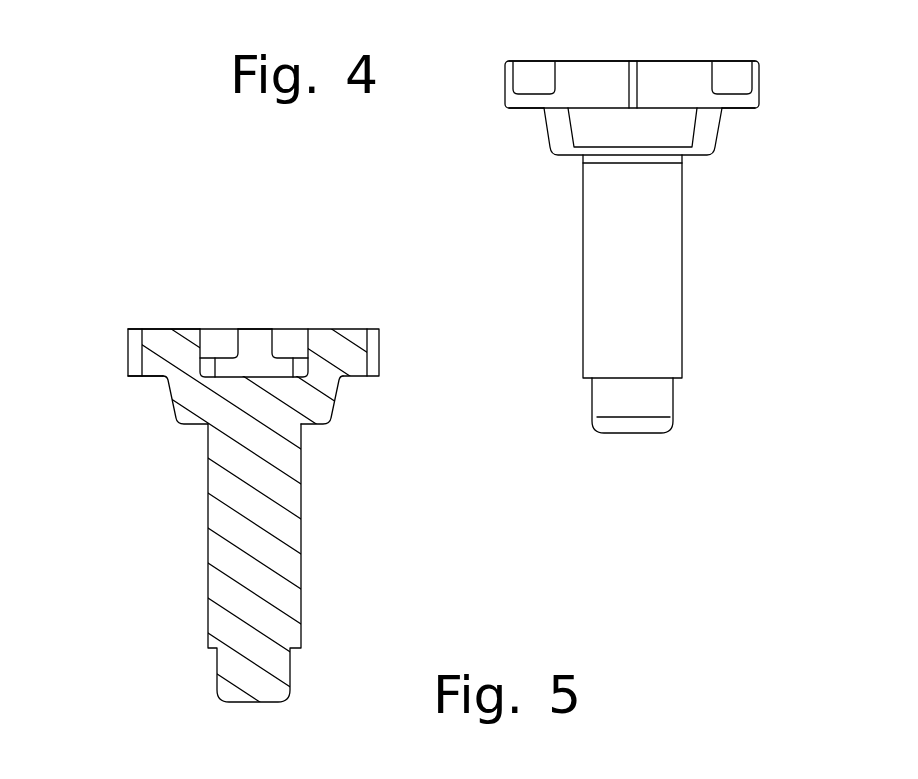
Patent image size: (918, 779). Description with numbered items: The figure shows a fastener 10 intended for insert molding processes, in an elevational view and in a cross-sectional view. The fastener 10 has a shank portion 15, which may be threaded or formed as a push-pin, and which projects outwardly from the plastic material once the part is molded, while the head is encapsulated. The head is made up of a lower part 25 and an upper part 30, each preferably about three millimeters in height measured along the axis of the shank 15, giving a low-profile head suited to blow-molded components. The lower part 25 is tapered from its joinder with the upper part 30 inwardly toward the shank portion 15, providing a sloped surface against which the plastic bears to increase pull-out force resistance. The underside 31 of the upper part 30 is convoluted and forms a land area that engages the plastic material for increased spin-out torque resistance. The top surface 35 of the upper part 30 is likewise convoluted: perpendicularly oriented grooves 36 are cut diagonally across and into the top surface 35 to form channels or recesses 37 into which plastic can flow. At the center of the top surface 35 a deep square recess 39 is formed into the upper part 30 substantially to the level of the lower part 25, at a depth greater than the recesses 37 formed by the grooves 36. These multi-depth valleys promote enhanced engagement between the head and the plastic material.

In FIG. 4, the fastener 10 is at (635, 216).
In FIG. 5, the fastener 10 is at (263, 478).
In FIG. 4, the shank portion 15 is at (660, 296).
In FIG. 5, the shank portion 15 is at (293, 539).
In FIG. 4, the lower part 25 is at (717, 142).
In FIG. 5, the lower part 25 is at (330, 405).
In FIG. 4, the upper part 30 is at (758, 60).
In FIG. 5, the upper part 30 is at (382, 357).
In FIG. 4, the underside 31 is at (738, 110).
In FIG. 5, the underside 31 is at (148, 380).
In FIG. 4, the top surface 35 is at (682, 61).
In FIG. 5, the top surface 35 is at (160, 329).
In FIG. 4, the grooves 36 is at (740, 77).
In FIG. 5, the recesses 37 is at (218, 340).
In FIG. 5, the square recess 39 is at (257, 347).